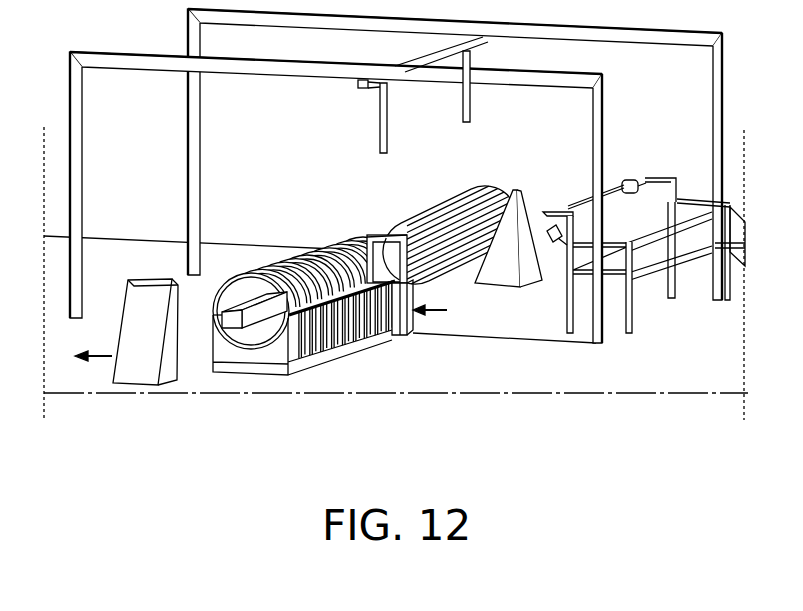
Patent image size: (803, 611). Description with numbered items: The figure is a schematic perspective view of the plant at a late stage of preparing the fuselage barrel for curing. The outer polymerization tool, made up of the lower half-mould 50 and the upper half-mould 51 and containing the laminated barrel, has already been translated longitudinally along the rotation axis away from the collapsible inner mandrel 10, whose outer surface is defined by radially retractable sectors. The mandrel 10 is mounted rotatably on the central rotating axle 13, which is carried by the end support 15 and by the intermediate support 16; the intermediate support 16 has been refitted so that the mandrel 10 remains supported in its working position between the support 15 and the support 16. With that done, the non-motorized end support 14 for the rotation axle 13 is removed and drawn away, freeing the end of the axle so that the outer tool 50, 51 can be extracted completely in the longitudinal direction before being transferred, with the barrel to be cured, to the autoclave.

The collapsible inner mandrel 10 is at (418, 218).
The central rotating axle 13 is at (250, 320).
The end support 14 is at (131, 373).
The end support 15 is at (541, 212).
The intermediate support 16 is at (422, 322).
The lower half-mould 50 is at (281, 371).
The upper half-mould 51 is at (318, 243).